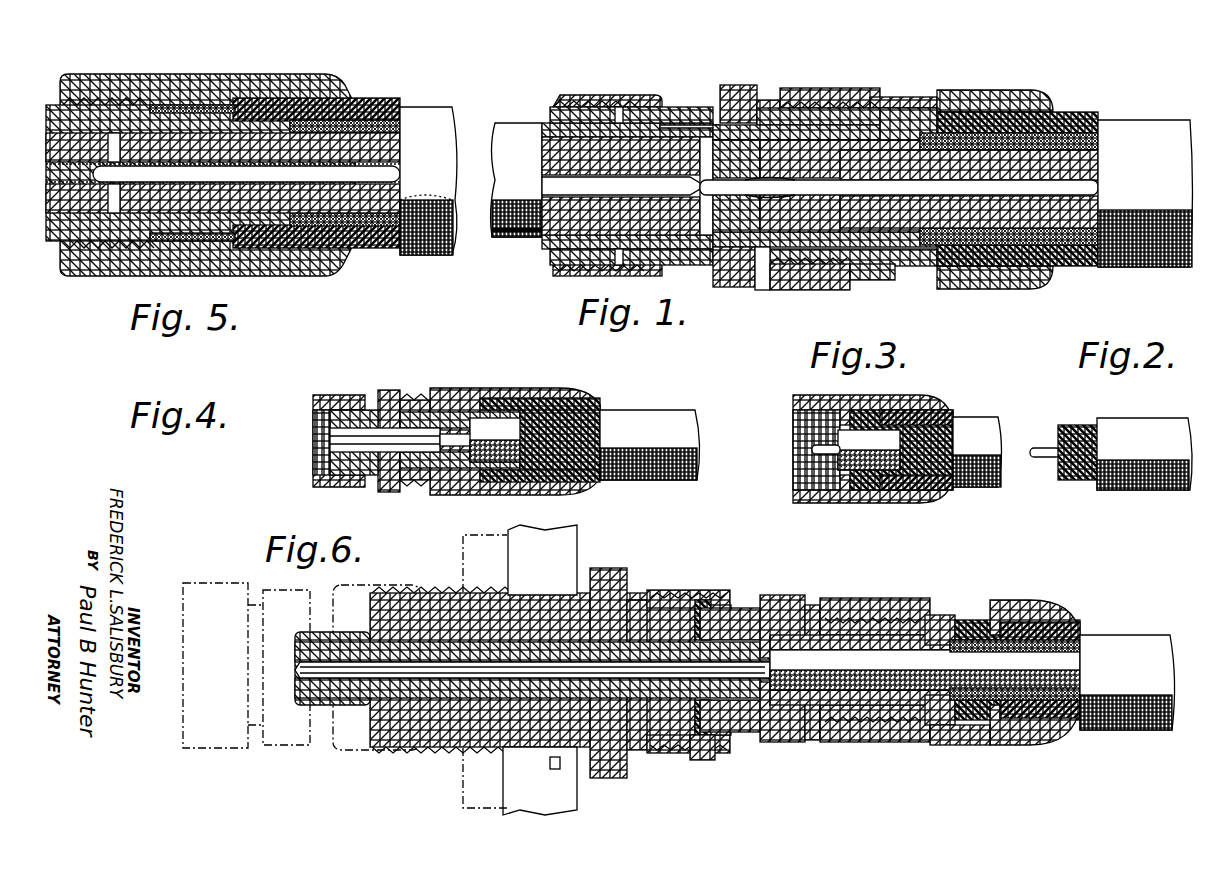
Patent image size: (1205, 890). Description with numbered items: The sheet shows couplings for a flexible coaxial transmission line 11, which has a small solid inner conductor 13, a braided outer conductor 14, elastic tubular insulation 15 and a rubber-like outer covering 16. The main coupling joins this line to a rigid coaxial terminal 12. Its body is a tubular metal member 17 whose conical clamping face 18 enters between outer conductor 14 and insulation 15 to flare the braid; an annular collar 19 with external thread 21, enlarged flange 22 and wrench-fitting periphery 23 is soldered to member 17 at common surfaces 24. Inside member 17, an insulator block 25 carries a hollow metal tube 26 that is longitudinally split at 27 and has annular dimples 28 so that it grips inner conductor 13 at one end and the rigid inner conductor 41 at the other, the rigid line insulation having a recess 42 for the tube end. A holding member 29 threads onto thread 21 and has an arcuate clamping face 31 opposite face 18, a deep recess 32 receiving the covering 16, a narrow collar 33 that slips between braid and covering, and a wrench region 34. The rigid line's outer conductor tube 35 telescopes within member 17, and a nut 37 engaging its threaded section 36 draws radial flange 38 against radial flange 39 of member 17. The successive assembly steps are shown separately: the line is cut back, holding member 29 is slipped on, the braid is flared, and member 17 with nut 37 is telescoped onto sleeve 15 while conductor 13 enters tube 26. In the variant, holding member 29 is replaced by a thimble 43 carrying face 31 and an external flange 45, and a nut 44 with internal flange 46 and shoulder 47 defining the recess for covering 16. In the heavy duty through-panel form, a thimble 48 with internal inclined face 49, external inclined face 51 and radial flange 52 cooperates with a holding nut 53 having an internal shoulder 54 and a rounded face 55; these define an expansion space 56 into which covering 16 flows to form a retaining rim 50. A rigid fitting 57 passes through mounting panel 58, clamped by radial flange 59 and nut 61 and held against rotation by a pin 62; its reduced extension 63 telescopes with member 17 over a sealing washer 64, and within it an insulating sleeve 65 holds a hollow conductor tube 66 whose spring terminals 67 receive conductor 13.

In FIG. 5, the flexible coaxial conductor transmission line 11 is at (432, 107).
In FIG. 1, the flexible coaxial conductor transmission line 11 is at (1150, 120).
In FIG. 4, the flexible coaxial conductor transmission line 11 is at (667, 410).
In FIG. 3, the flexible coaxial conductor transmission line 11 is at (975, 417).
In FIG. 2, the flexible coaxial conductor transmission line 11 is at (1155, 418).
In FIG. 6, the flexible coaxial conductor transmission line 11 is at (1145, 635).
In FIG. 1, the rigid coaxial line terminal 12 is at (508, 123).
In FIG. 5, the inner conductor 13 is at (395, 172).
In FIG. 1, the inner conductor 13 is at (1085, 185).
In FIG. 4, the inner conductor 13 is at (455, 446).
In FIG. 3, the inner conductor 13 is at (812, 450).
In FIG. 2, the inner conductor 13 is at (1040, 448).
In FIG. 6, the inner conductor 13 is at (780, 668).
In FIG. 5, the outer conductor 14 is at (392, 120).
In FIG. 1, the outer conductor 14 is at (1097, 140).
In FIG. 4, the outer conductor 14 is at (530, 410).
In FIG. 3, the outer conductor 14 is at (865, 410).
In FIG. 2, the outer conductor 14 is at (1080, 425).
In FIG. 6, the outer conductor 14 is at (1080, 645).
In FIG. 5, the tubular insulation 15 is at (398, 135).
In FIG. 1, the tubular insulation 15 is at (882, 120).
In FIG. 4, the tubular insulation 15 is at (500, 418).
In FIG. 3, the tubular insulation 15 is at (869, 448).
In FIG. 2, the tubular insulation 15 is at (1062, 480).
In FIG. 6, the tubular insulation 15 is at (1080, 660).
In FIG. 5, the outer insulating covering 16 is at (348, 108).
In FIG. 1, the outer insulating covering 16 is at (1075, 115).
In FIG. 4, the outer insulating covering 16 is at (585, 402).
In FIG. 3, the outer insulating covering 16 is at (908, 410).
In FIG. 2, the outer insulating covering 16 is at (1120, 430).
In FIG. 6, the outer insulating covering 16 is at (1070, 628).
In FIG. 5, the tubular metal member 17 is at (145, 245).
In FIG. 1, the tubular metal member 17 is at (720, 250).
In FIG. 4, the tubular metal member 17 is at (405, 400).
In FIG. 6, the tubular metal member 17 is at (778, 595).
In FIG. 5, the clamping face 18 is at (223, 173).
In FIG. 1, the clamping face 18 is at (969, 186).
In FIG. 4, the clamping face 18 is at (495, 470).
In FIG. 6, the clamping face 18 is at (945, 650).
In FIG. 5, the annular collar 19 is at (93, 100).
In FIG. 1, the annular collar 19 is at (762, 275).
In FIG. 4, the annular collar 19 is at (405, 482).
In FIG. 6, the annular collar 19 is at (812, 605).
In FIG. 1, the external thread 21 is at (772, 100).
In FIG. 1, the enlarged flange 22 is at (732, 85).
In FIG. 1, the periphery 23 is at (765, 100).
In FIG. 1, the common surfaces 24 is at (716, 124).
In FIG. 1, the insulator block 25 is at (812, 275).
In FIG. 4, the insulator block 25 is at (373, 412).
In FIG. 5, the hollow metal tube 26 is at (200, 236).
In FIG. 1, the hollow metal tube 26 is at (870, 275).
In FIG. 4, the hollow metal tube 26 is at (330, 432).
In FIG. 1, the longitudinal split 27 is at (765, 197).
In FIG. 1, the annular dimples 28 is at (945, 280).
In FIG. 1, the holding member 29 is at (836, 88).
In FIG. 4, the holding member 29 is at (460, 388).
In FIG. 3, the holding member 29 is at (812, 395).
In FIG. 5, the annular clamping face 31 is at (205, 105).
In FIG. 1, the annular clamping face 31 is at (920, 130).
In FIG. 4, the annular clamping face 31 is at (515, 478).
In FIG. 1, the annular recess 32 is at (992, 110).
In FIG. 3, the annular recess 32 is at (900, 502).
In FIG. 1, the collar 33 is at (1055, 108).
In FIG. 4, the collar 33 is at (565, 395).
In FIG. 3, the collar 33 is at (940, 497).
In FIG. 1, the wrench fitting region 34 is at (885, 97).
In FIG. 6, the wrench fitting region 34 is at (985, 600).
In FIG. 1, the outer conductor tube 35 is at (684, 108).
In FIG. 1, the externally threaded section 36 is at (578, 95).
In FIG. 1, the nut 37 is at (622, 95).
In FIG. 4, the nut 37 is at (338, 395).
In FIG. 6, the nut 37 is at (667, 590).
In FIG. 1, the radial flange 38 is at (664, 95).
In FIG. 6, the radial flange 38 is at (725, 605).
In FIG. 1, the radial flange 39 is at (645, 107).
In FIG. 6, the radial flange 39 is at (703, 600).
In FIG. 1, the inner conductor 41 is at (545, 177).
In FIG. 1, the recess 42 is at (640, 265).
In FIG. 5, the thimble 43 is at (275, 98).
In FIG. 5, the nut 44 is at (172, 74).
In FIG. 5, the external annular radial flange 45 is at (222, 108).
In FIG. 5, the internal radial annular flange 46 is at (248, 106).
In FIG. 5, the internal shoulder 47 is at (305, 100).
In FIG. 6, the cylindrical thimble 48 is at (1050, 625).
In FIG. 6, the internal annular inclined clamping face 49 is at (905, 648).
In FIG. 6, the annular rim 50 is at (968, 620).
In FIG. 6, the external inclined annular clamping face 51 is at (975, 650).
In FIG. 6, the external annular radial flange 52 is at (940, 615).
In FIG. 6, the holding nut 53 is at (880, 598).
In FIG. 6, the internal shoulder 54 is at (1010, 600).
In FIG. 6, the rounded internal annular clamping face 55 is at (985, 745).
In FIG. 6, the annular expansion space 56 is at (945, 745).
In FIG. 6, the rigid fitting 57 is at (600, 568).
In FIG. 6, the mounting panel 58 is at (578, 560).
In FIG. 6, the radial flange 59 is at (632, 575).
In FIG. 6, the nut 61 is at (463, 545).
In FIG. 6, the pin 62 is at (560, 770).
In FIG. 6, the reduced integral extension 63 is at (745, 615).
In FIG. 6, the flexible sealing washer 64 is at (702, 760).
In FIG. 6, the rigid insulating sleeve 65 is at (445, 700).
In FIG. 6, the hollow conductor tube 66 is at (400, 700).
In FIG. 6, the spring terminals 67 is at (300, 705).